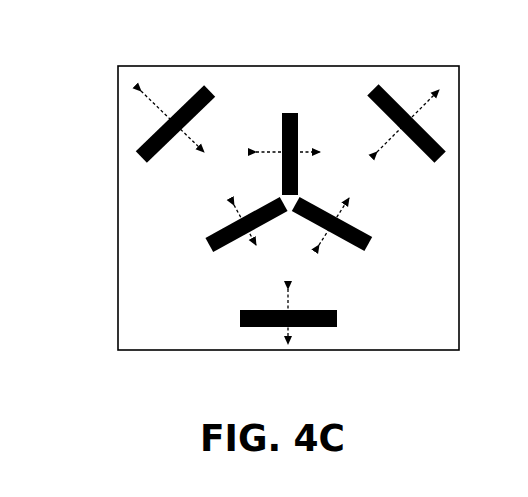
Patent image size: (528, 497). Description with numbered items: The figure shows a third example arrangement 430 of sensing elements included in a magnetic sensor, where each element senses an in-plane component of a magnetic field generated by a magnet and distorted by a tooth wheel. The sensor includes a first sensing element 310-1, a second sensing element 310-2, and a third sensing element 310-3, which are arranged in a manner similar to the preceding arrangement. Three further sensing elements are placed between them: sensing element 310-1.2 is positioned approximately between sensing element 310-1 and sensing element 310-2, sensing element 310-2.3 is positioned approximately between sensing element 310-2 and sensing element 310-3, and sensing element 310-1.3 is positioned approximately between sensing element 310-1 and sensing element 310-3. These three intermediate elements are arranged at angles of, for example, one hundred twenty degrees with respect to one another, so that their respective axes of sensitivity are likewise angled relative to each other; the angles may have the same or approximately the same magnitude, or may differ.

The third example arrangement 430 is at (114, 64).
The sensing element 310-1 is at (210, 86).
The sensing element 310-2 is at (379, 84).
The sensing element 310-1.2 is at (291, 112).
The sensing element 310-1.3 is at (205, 240).
The sensing element 310-2.3 is at (373, 240).
The sensing element 310-3 is at (263, 328).